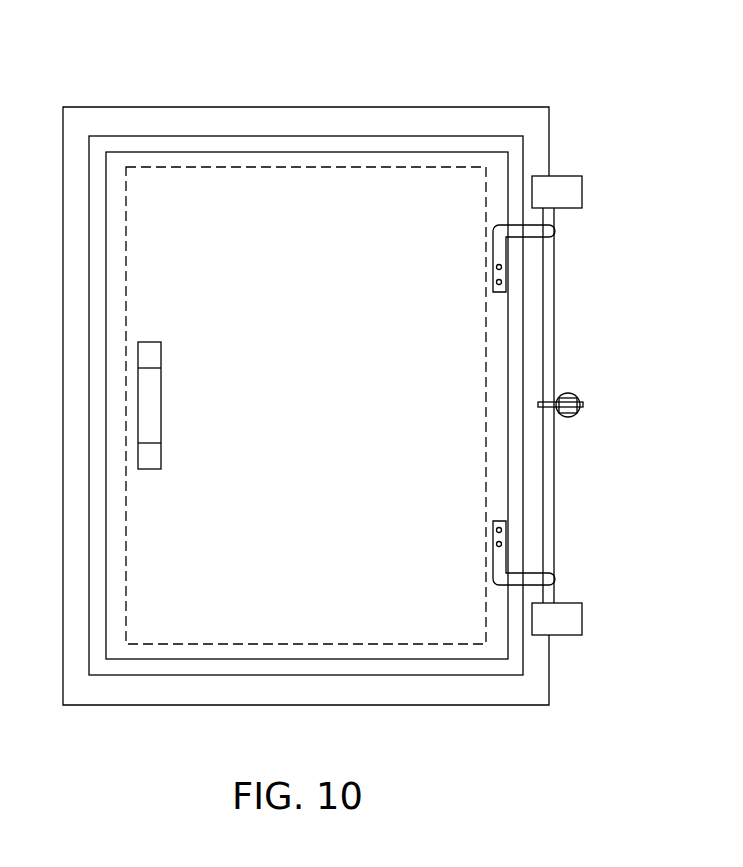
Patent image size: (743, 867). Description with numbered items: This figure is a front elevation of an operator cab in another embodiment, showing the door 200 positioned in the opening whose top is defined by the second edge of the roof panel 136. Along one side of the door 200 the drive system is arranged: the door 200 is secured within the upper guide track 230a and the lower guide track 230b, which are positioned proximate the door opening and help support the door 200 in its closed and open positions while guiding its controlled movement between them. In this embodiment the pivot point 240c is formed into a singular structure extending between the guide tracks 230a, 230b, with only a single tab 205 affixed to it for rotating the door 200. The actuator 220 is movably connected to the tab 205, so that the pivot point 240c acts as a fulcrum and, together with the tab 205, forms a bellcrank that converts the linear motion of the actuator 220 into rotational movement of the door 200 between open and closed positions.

The roof panel 136 is at (262, 107).
The door 200 is at (118, 165).
The upper guide track 230a is at (565, 195).
The lower guide track 230b is at (567, 622).
The pivot point 240c is at (548, 320).
The actuator 220 is at (565, 390).
The tab 205 is at (583, 405).